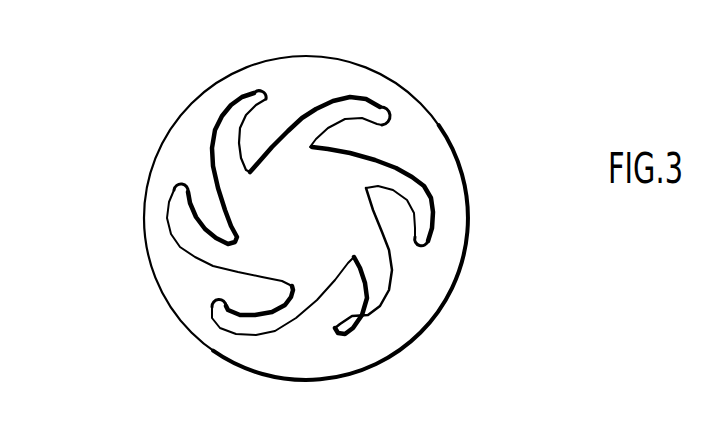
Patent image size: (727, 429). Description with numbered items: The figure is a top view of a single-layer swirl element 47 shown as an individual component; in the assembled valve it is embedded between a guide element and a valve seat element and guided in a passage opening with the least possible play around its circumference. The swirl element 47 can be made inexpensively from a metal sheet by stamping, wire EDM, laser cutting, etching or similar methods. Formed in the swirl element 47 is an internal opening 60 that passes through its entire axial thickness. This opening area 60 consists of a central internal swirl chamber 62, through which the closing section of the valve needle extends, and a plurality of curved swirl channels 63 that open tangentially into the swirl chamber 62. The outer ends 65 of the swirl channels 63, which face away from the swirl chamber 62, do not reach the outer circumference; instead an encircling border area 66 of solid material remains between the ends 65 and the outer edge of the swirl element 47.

The swirl element 47 is at (245, 218).
The internal opening 60 is at (195, 261).
The internal swirl chamber 62 is at (382, 144).
The swirl channel 63 is at (366, 265).
The end of swirl channel 65 is at (174, 135).
The encircling border area 66 is at (204, 375).